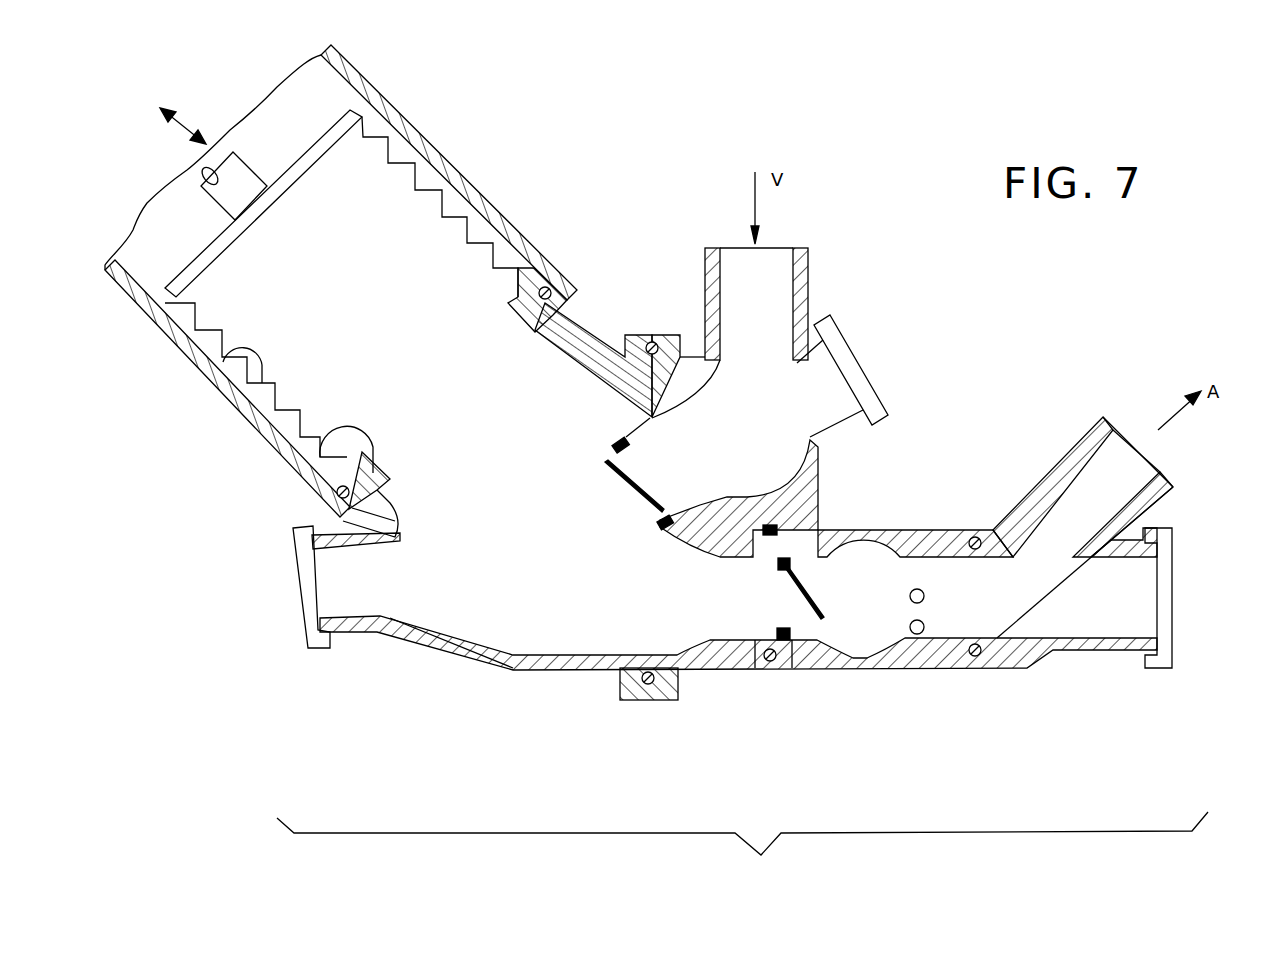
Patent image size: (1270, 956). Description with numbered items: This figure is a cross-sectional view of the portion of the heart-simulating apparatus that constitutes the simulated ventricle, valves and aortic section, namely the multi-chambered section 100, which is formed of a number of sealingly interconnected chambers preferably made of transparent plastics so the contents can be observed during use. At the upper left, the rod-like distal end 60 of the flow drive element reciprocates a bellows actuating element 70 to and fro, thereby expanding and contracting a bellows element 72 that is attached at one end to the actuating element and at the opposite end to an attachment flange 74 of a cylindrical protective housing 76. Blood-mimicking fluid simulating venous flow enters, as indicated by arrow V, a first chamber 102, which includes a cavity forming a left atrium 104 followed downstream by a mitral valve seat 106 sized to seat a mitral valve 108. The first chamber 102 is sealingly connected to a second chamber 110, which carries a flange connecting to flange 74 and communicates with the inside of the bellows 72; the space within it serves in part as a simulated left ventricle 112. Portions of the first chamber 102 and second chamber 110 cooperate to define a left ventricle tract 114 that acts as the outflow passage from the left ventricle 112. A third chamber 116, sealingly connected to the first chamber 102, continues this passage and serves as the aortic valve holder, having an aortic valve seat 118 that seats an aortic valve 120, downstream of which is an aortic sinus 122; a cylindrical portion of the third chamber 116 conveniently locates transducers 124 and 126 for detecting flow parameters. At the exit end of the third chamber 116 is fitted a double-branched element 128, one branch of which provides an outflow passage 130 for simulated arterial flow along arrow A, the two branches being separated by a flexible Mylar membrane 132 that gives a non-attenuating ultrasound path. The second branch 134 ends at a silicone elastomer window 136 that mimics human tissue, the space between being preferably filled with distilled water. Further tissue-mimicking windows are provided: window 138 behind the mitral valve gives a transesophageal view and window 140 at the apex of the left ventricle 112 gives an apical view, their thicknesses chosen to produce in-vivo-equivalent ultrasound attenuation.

The rod-like distal end 60 is at (220, 187).
The bellows actuating element 70 is at (303, 155).
The bellows element 72 is at (200, 380).
The attachment flange 74 is at (290, 463).
The cylindrical protective housing 76 is at (483, 204).
The multi-chambered section 100 is at (742, 852).
The first chamber 102 is at (800, 283).
The left atrium 104 is at (783, 450).
The mitral valve seat 106 is at (616, 439).
The mitral valve 108 is at (645, 502).
The second chamber 110 is at (547, 673).
The left ventricle 112 is at (515, 598).
The left ventricle tract 114 is at (738, 641).
The third chamber 116 is at (900, 670).
The aortic valve seat 118 is at (777, 630).
The aortic valve 120 is at (793, 592).
The aortic sinus 122 is at (858, 641).
The transducer 124 is at (921, 603).
The transducer 126 is at (918, 634).
The double-branched element 128 is at (1050, 657).
The outflow passage 130 is at (1147, 470).
The flexible membrane 132 is at (1053, 583).
The second branch 134 is at (1142, 577).
The window 136 is at (1172, 613).
The window 138 is at (867, 378).
The window 140 is at (300, 615).